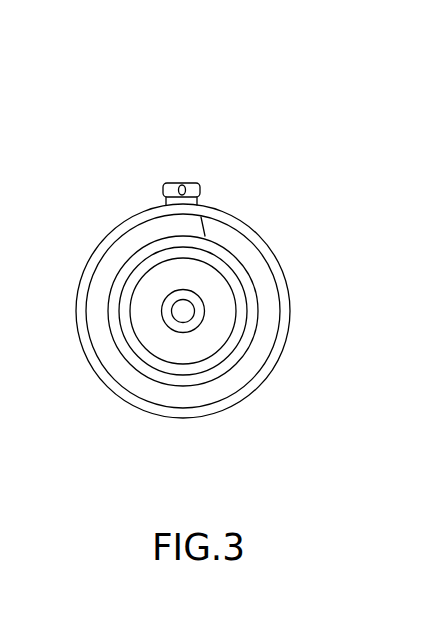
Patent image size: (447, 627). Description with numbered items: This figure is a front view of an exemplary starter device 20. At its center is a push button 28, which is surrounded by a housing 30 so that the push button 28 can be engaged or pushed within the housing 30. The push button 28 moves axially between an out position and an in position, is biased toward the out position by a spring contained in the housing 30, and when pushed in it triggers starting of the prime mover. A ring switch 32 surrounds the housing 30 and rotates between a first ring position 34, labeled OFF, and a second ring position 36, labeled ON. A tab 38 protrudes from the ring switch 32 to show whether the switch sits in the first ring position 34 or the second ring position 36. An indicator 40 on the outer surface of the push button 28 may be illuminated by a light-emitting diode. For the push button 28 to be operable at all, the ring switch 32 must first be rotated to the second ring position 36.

The starter device 20 is at (118, 86).
The push button 28 is at (218, 272).
The housing 30 is at (256, 300).
The ring switch 32 is at (215, 412).
The first ring position 34 is at (116, 238).
The second ring position 36 is at (201, 217).
The tab 38 is at (188, 183).
The indicator 40 is at (185, 312).